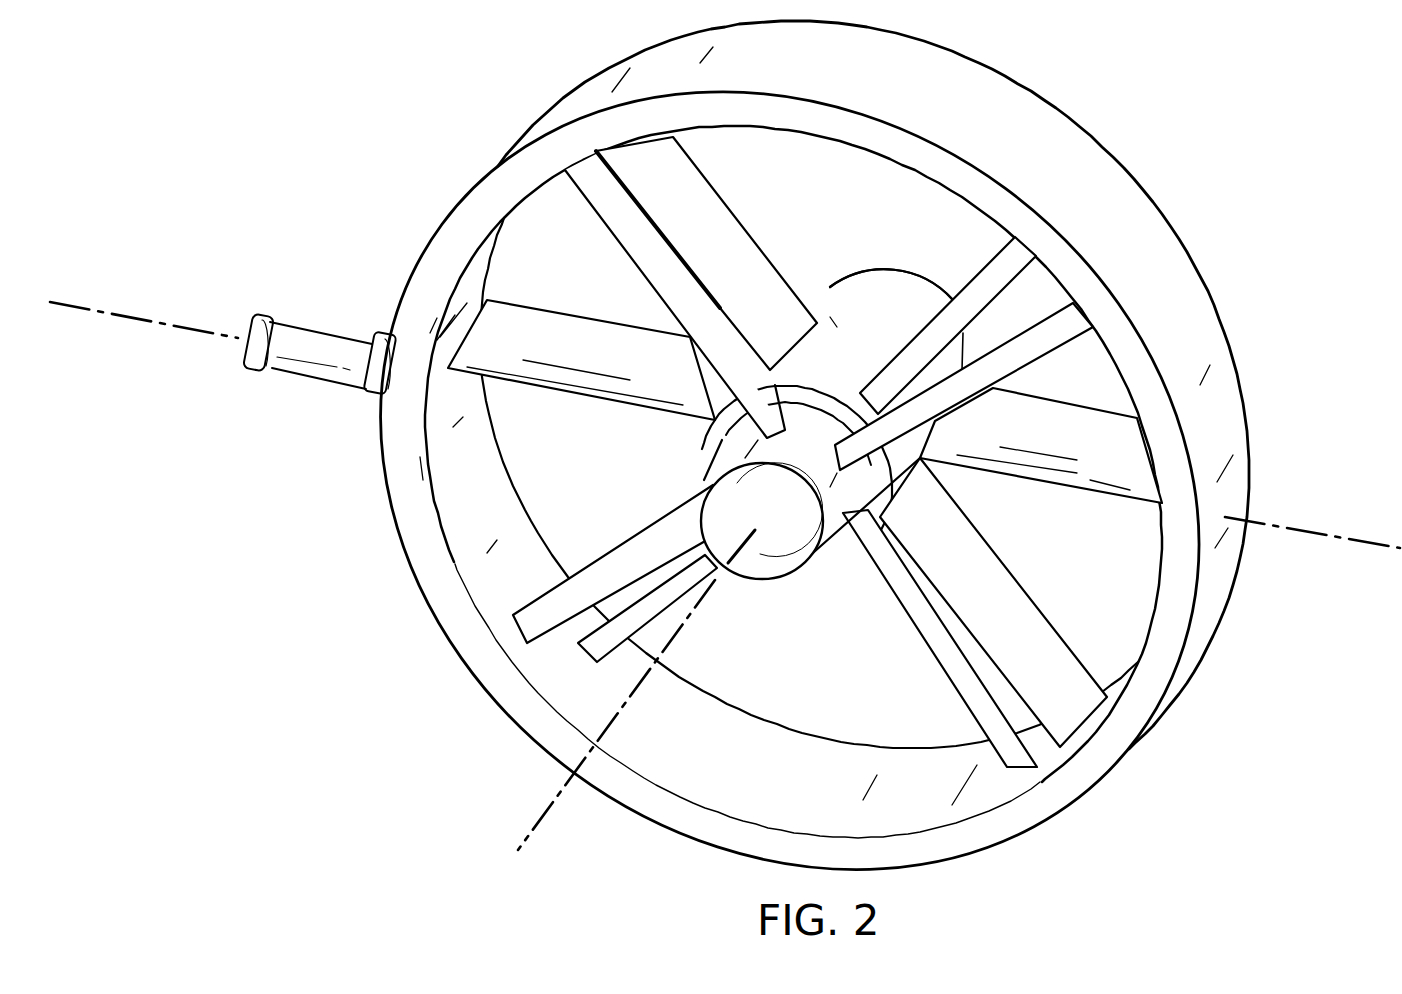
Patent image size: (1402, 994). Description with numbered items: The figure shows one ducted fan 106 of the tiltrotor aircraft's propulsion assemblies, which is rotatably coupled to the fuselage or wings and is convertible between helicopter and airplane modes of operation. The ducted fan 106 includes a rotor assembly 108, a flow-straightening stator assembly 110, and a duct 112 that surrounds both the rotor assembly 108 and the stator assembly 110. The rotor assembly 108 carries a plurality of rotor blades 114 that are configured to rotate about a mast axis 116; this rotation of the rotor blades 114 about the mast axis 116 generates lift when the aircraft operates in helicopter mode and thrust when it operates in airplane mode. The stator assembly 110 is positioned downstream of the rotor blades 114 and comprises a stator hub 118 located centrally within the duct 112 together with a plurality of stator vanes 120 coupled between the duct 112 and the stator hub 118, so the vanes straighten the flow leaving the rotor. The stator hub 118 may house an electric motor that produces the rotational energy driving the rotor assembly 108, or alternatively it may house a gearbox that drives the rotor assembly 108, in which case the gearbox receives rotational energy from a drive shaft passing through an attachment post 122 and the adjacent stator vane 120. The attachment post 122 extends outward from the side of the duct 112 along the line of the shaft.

The ducted fan 106 is at (789, 497).
The rotor assembly 108 is at (785, 578).
The flow-straightening stator assembly 110 is at (890, 272).
The duct 112 is at (573, 105).
The rotor blades 114 is at (593, 200).
The mast axis 116 is at (530, 840).
The stator hub 118 is at (848, 297).
The stator vanes 120 is at (722, 213).
The attachment post 122 is at (323, 330).